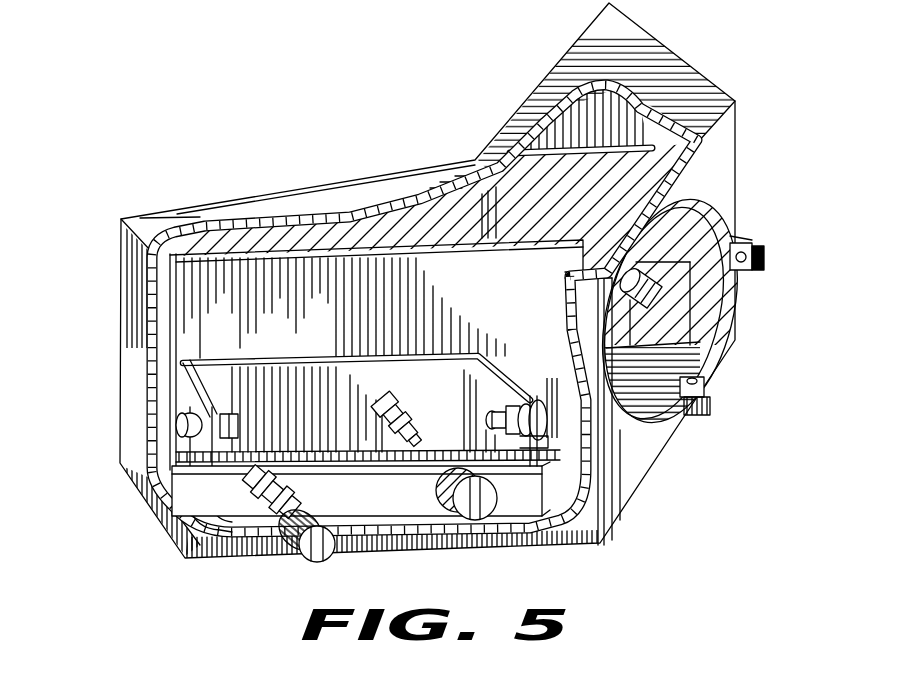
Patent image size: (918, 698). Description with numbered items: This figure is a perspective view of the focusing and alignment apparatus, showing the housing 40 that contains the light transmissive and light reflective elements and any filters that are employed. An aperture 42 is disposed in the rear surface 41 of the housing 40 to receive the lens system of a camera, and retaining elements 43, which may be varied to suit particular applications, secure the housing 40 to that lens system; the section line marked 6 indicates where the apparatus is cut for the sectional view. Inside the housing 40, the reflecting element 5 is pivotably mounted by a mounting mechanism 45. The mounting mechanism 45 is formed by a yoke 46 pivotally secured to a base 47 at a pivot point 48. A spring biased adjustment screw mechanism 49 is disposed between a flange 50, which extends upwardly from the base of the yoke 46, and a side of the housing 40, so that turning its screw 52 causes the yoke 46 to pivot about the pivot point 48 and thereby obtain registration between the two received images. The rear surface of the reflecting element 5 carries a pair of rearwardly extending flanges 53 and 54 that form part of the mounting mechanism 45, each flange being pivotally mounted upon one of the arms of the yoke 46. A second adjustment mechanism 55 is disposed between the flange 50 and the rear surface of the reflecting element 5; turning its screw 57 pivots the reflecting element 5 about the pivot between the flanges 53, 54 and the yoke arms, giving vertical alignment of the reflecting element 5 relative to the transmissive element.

The reflecting element 5 is at (560, 242).
The section line for FIG. 6 is at (143, 358).
The housing 40 is at (736, 178).
The rear surface 41 is at (712, 196).
The aperture 42 is at (735, 228).
The retaining elements 43 is at (736, 272).
The mounting mechanism 45 is at (532, 396).
The yoke 46 is at (538, 425).
The base 47 is at (562, 540).
The pivot point 48 is at (541, 414).
The spring biased adjustment screw mechanism 49 is at (302, 498).
The flange 50 is at (525, 498).
The screw 52 is at (316, 566).
The flange 53 is at (213, 400).
The flange 54 is at (480, 392).
The second adjustment mechanism 55 is at (486, 420).
The screw 57 is at (476, 520).